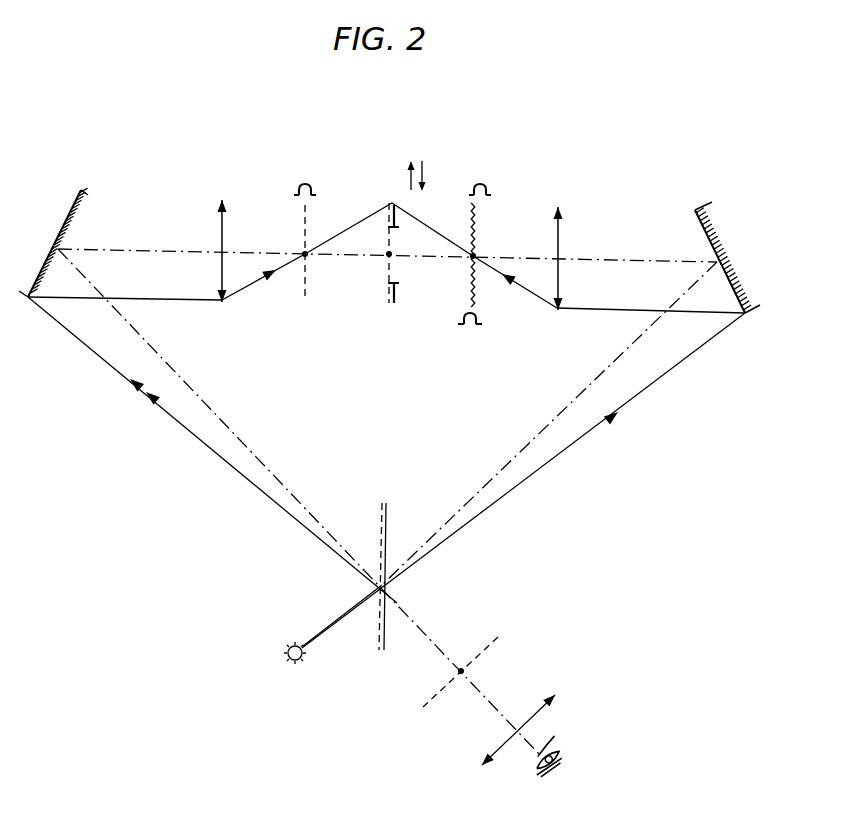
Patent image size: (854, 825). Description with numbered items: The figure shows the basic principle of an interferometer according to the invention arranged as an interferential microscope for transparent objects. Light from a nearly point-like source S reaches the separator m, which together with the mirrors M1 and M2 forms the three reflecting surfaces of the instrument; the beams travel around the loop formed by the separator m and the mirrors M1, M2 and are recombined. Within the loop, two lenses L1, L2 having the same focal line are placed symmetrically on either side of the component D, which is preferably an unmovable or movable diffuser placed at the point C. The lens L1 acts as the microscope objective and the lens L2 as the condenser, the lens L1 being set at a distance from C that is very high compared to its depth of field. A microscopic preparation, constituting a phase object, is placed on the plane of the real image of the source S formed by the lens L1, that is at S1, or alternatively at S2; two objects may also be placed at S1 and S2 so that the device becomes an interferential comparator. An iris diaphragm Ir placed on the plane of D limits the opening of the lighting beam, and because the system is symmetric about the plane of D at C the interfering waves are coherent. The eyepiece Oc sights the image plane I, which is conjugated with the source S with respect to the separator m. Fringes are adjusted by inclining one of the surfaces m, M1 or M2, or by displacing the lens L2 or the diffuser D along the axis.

The mirror M2 is at (53, 242).
The lens L2 is at (223, 236).
The image plane of source S2 is at (317, 252).
The diffuser D is at (404, 232).
The center point C is at (388, 257).
The iris diaphragm Ir is at (401, 263).
The image plane of source S1 is at (462, 263).
The lens L1 is at (558, 240).
The mirror M1 is at (727, 257).
The separator m is at (384, 564).
The source S is at (280, 647).
The image plane I is at (466, 664).
The eyepiece Oc is at (535, 725).